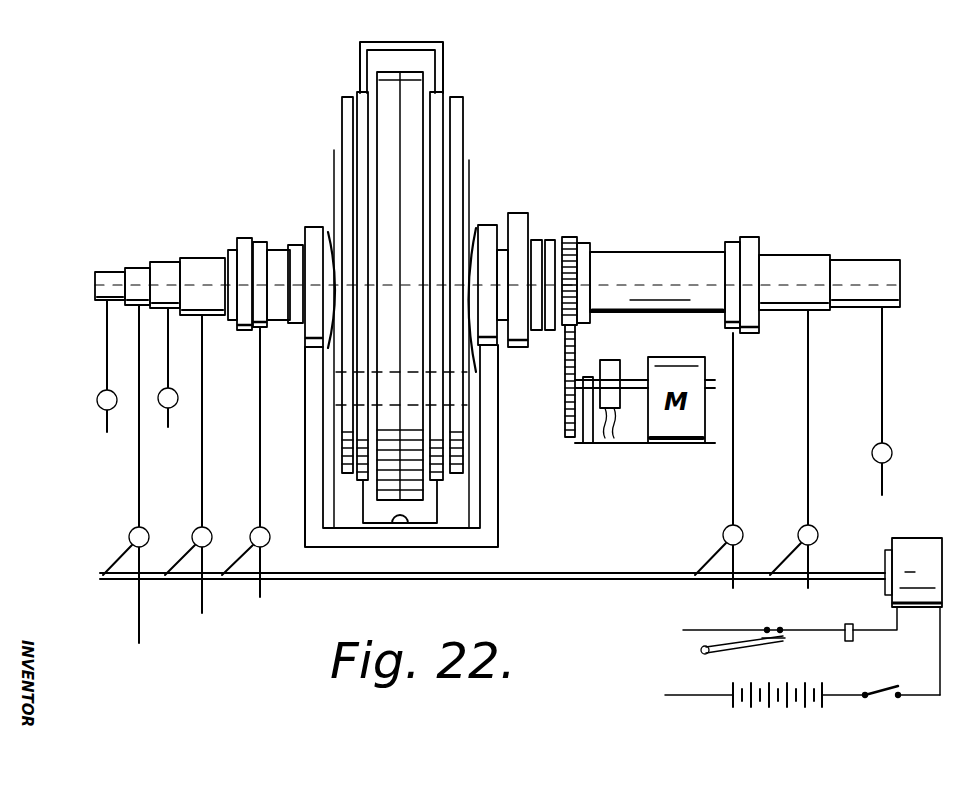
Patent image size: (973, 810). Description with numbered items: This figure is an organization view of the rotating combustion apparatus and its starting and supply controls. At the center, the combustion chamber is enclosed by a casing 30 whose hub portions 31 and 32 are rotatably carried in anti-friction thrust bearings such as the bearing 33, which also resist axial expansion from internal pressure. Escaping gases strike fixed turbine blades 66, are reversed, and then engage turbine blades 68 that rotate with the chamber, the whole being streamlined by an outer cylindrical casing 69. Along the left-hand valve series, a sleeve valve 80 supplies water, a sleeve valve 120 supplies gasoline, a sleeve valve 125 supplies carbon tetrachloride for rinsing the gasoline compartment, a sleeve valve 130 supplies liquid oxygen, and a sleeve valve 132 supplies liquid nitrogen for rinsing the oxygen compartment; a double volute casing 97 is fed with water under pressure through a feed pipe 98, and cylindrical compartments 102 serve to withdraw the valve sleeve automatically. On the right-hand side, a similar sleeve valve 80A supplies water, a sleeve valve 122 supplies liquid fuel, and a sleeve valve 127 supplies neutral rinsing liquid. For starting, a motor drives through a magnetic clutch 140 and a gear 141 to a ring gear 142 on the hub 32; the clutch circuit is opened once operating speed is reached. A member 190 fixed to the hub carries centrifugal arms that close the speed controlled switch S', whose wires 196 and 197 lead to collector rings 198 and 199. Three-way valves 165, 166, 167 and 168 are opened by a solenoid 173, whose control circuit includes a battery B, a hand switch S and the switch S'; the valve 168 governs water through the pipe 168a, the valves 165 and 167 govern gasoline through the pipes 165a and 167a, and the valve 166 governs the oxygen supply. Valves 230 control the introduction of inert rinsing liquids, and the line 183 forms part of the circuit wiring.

The sleeve valve 132 is at (100, 272).
The sleeve valve 130 is at (132, 268).
The sleeve valve 125 is at (165, 262).
The sleeve valve 120 is at (212, 247).
The cylindrical compartments 102 is at (244, 238).
The double volute casing 97 is at (260, 242).
The sleeve valve 80 is at (277, 250).
The sleeve valve 80A is at (715, 222).
The anti-friction thrust bearing 33 is at (318, 227).
The casing 30 is at (334, 175).
The fixed turbine blades 66 is at (360, 92).
The turbine blades 68 is at (345, 97).
The outer cylindrical casing 69 is at (410, 78).
The hub portion 31 is at (487, 225).
The speed control member 190 is at (516, 213).
The hub portion 32 is at (537, 240).
The collector ring 198 is at (551, 240).
The collector ring 199 is at (570, 237).
The ring gear 142 is at (598, 252).
The sleeve valve 122 is at (785, 255).
The sleeve valve 127 is at (893, 246).
The gear 141 is at (565, 410).
The magnetic clutch 140 is at (606, 360).
The valves 230 is at (97, 400).
The three-way valve 166 is at (130, 532).
The three-way valve 165 is at (193, 532).
The pipe 165a is at (204, 378).
The feed pipe 98 is at (261, 382).
The three-way valve 168 is at (740, 530).
The pipe 168a is at (735, 372).
The three-way valve 167 is at (816, 530).
The pipe 167a is at (812, 366).
The solenoid 173 is at (942, 540).
The wire 196 is at (724, 628).
The wire 197 is at (790, 638).
The speed controlled switch S' is at (741, 655).
The battery B is at (765, 684).
The hand switch S is at (902, 679).
The conductor 183 is at (700, 698).